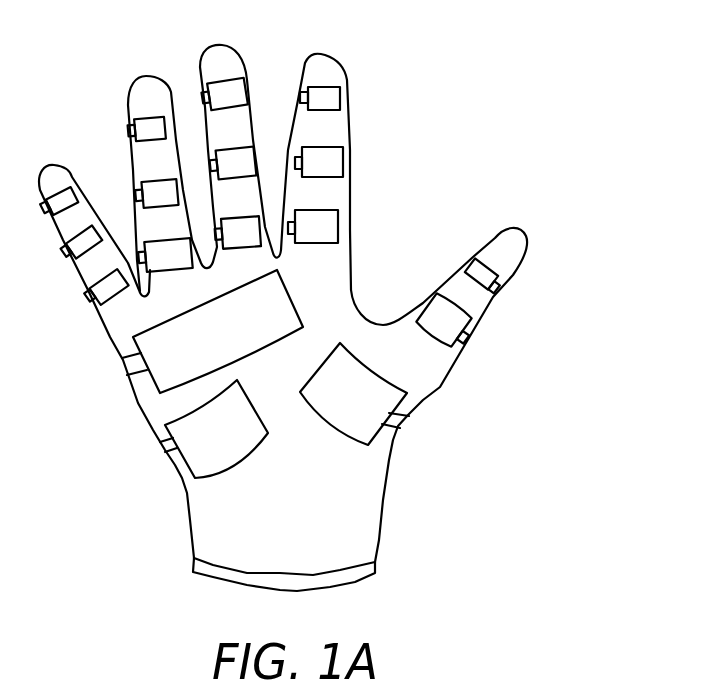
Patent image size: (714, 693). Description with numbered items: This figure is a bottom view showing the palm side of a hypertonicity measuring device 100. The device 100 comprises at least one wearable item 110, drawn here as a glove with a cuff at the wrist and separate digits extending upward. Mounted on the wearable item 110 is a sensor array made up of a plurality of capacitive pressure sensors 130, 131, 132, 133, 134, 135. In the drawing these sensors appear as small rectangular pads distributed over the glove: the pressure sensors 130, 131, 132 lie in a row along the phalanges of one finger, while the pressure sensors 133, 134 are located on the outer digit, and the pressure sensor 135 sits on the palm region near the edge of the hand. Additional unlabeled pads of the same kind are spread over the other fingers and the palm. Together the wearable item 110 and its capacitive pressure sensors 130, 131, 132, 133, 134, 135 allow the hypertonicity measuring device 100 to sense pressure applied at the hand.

The hypertonicity measuring device 100 is at (106, 35).
The wearable item 110 is at (197, 529).
The capacitive pressure sensor 130 is at (337, 99).
The capacitive pressure sensor 131 is at (337, 165).
The capacitive pressure sensor 132 is at (337, 231).
The capacitive pressure sensor 133 is at (476, 258).
The capacitive pressure sensor 134 is at (431, 308).
The capacitive pressure sensor 135 is at (372, 421).